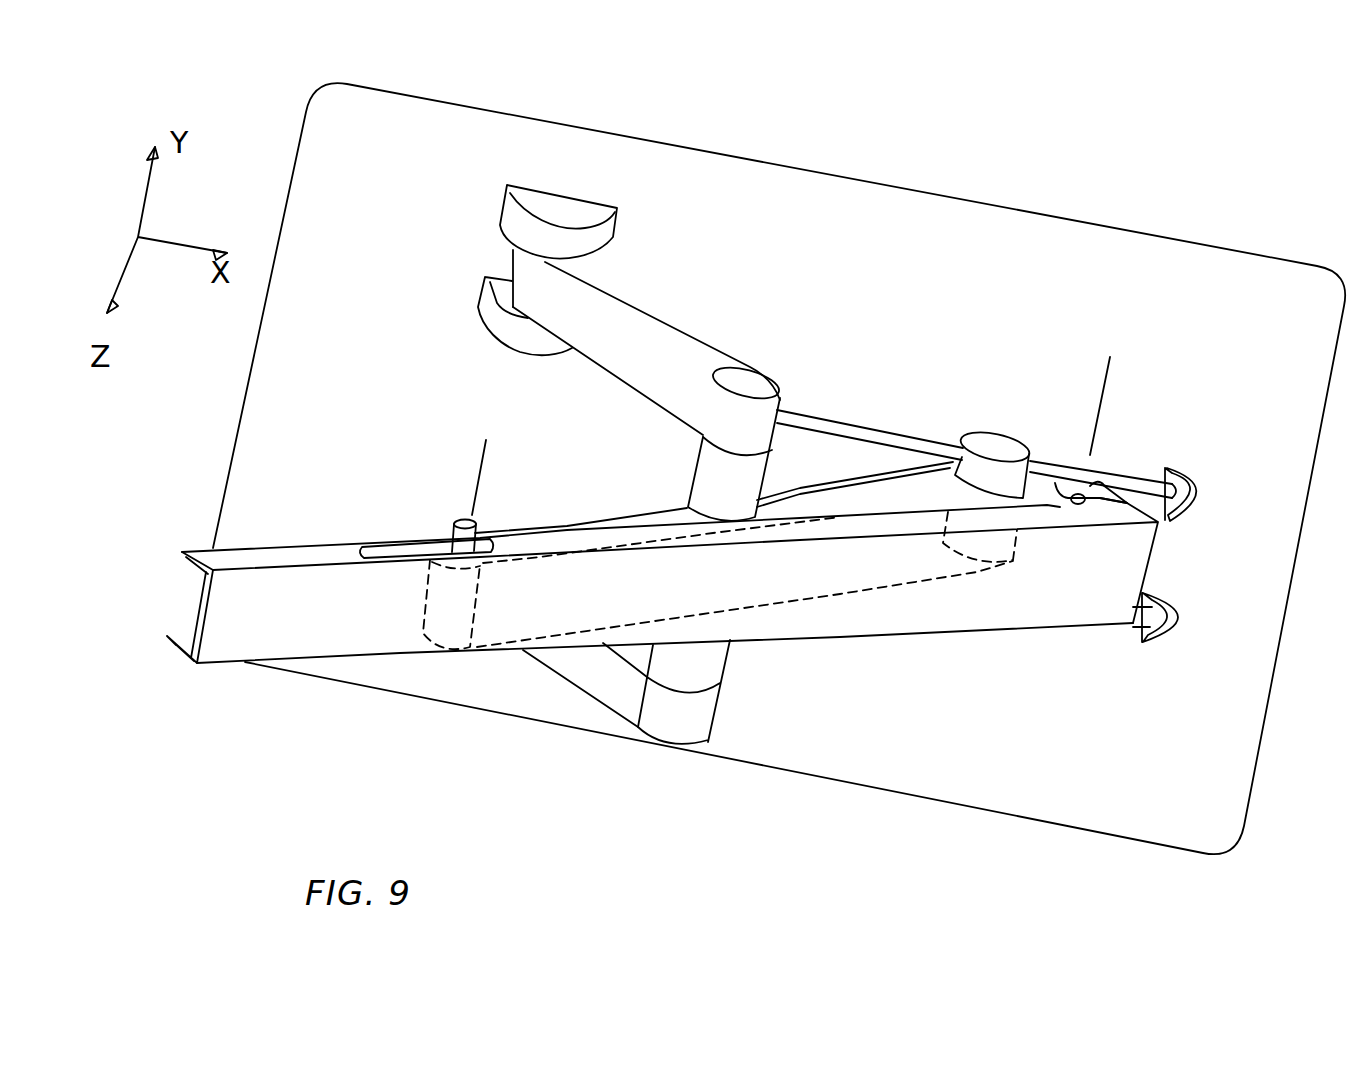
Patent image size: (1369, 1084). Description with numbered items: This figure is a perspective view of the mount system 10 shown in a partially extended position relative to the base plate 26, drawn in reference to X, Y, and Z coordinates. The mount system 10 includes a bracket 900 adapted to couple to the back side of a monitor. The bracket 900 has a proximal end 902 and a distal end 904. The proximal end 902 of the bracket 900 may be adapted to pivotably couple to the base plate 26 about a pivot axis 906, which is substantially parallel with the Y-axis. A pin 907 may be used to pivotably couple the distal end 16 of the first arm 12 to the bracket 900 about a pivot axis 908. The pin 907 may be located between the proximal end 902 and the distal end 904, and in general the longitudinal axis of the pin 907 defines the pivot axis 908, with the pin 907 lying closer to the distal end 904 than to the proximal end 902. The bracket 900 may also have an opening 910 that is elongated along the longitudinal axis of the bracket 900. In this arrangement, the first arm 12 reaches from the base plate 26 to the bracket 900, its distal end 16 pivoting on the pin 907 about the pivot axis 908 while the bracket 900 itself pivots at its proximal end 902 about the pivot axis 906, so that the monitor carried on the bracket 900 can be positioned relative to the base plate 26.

The base plate 26 is at (935, 218).
The mount system 10 is at (744, 341).
The first arm 12 is at (850, 493).
The distal end 16 is at (458, 648).
The bracket 900 is at (645, 640).
The proximal end 902 is at (1133, 572).
The distal end 904 is at (213, 600).
The pivot axis 906 is at (1108, 378).
The pin 907 is at (478, 525).
The pivot axis 908 is at (473, 478).
The opening 910 is at (387, 550).